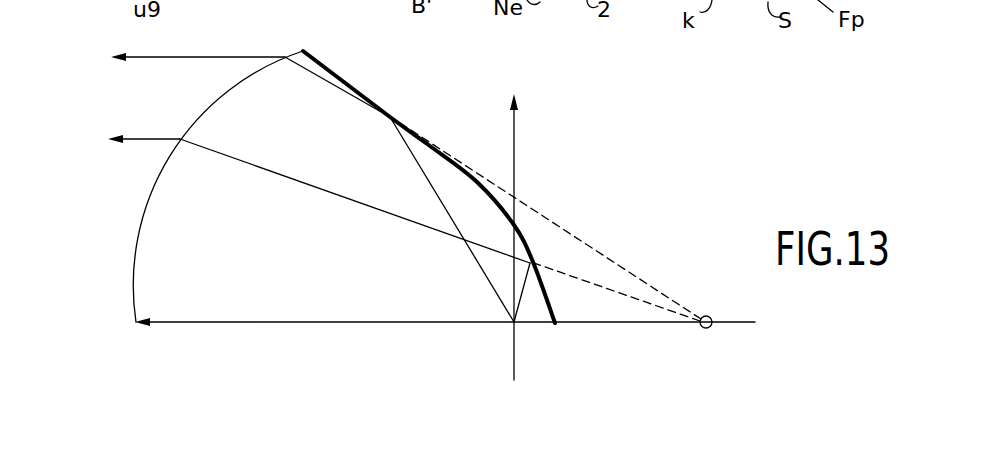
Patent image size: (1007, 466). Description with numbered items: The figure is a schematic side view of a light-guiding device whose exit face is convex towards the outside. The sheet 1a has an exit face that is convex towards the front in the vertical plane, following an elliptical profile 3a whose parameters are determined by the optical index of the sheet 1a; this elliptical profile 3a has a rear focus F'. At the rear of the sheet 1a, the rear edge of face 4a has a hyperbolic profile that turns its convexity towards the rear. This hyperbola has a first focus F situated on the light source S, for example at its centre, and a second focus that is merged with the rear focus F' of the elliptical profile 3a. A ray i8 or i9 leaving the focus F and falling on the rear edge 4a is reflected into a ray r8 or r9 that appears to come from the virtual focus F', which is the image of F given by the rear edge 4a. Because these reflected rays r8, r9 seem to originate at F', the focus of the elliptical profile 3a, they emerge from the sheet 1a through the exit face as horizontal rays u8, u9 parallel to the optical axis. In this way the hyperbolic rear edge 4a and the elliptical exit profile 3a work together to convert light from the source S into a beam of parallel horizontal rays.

The sheet 1a is at (320, 287).
The elliptical profile 3a is at (150, 208).
The rear edge of face 4a is at (470, 177).
The light source S is at (516, 325).
The first focus F is at (485, 347).
The rear focus F' is at (581, 245).
The ray i9 is at (480, 268).
The ray i8 is at (522, 298).
The reflected ray r9 is at (317, 76).
The reflected ray r8 is at (308, 183).
The horizontal ray u9 is at (166, 56).
The horizontal ray u8 is at (140, 138).